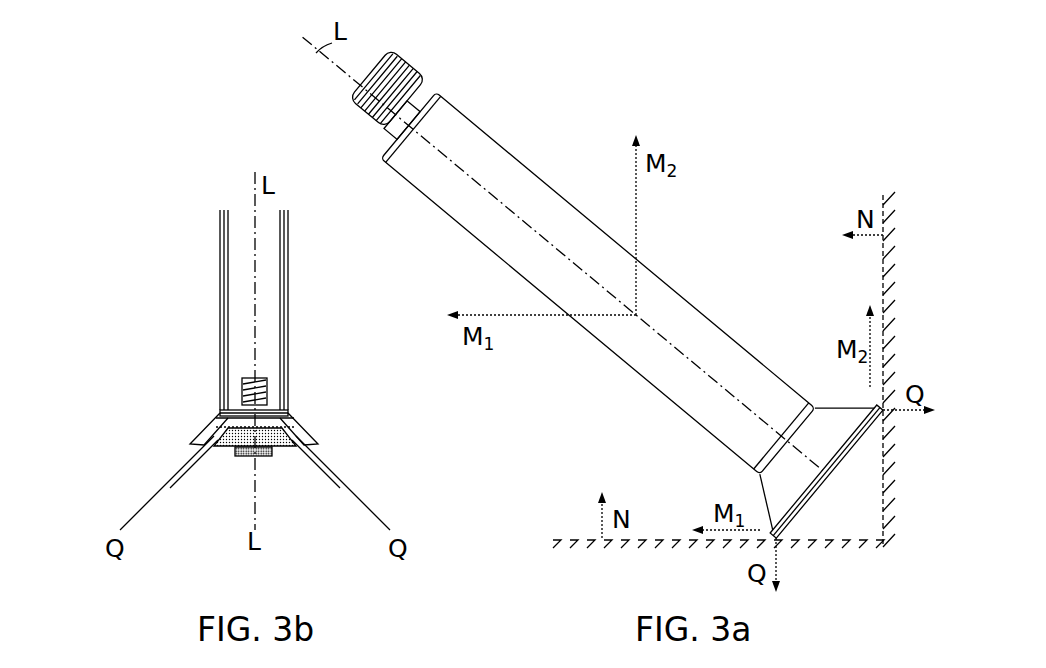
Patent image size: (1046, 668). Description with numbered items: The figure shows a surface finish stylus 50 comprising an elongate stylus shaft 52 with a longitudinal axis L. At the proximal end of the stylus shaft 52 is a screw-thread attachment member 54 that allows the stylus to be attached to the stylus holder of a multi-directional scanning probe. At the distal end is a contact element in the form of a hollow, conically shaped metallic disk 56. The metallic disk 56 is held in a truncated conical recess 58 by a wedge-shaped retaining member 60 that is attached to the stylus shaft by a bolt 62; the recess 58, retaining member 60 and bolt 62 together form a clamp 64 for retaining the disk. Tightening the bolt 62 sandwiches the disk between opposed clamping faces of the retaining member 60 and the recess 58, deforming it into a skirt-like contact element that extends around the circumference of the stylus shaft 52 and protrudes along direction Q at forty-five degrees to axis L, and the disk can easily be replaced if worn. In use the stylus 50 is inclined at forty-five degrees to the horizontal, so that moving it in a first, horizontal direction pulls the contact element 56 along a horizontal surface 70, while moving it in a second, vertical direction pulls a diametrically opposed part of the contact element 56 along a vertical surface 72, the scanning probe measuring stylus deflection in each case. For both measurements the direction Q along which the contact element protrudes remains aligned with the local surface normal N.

In FIG. 3a, the surface finish stylus 50 is at (543, 115).
In FIG. 3a, the elongate stylus shaft 52 is at (598, 283).
In FIG. 3a, the screw-thread attachment member 54 is at (394, 94).
In FIG. 3a, the conically shaped metallic disk 56 is at (809, 457).
In FIG. 3b, the conically shaped metallic disk 56 is at (328, 472).
In FIG. 3b, the truncated conical recess 58 is at (297, 420).
In FIG. 3b, the wedge-shaped retaining member 60 is at (282, 452).
In FIG. 3b, the bolt 62 is at (264, 372).
In FIG. 3b, the clamp 64 is at (132, 375).
In FIG. 3a, the horizontal surface 70 is at (864, 605).
In FIG. 3a, the vertical surface 72 is at (950, 295).